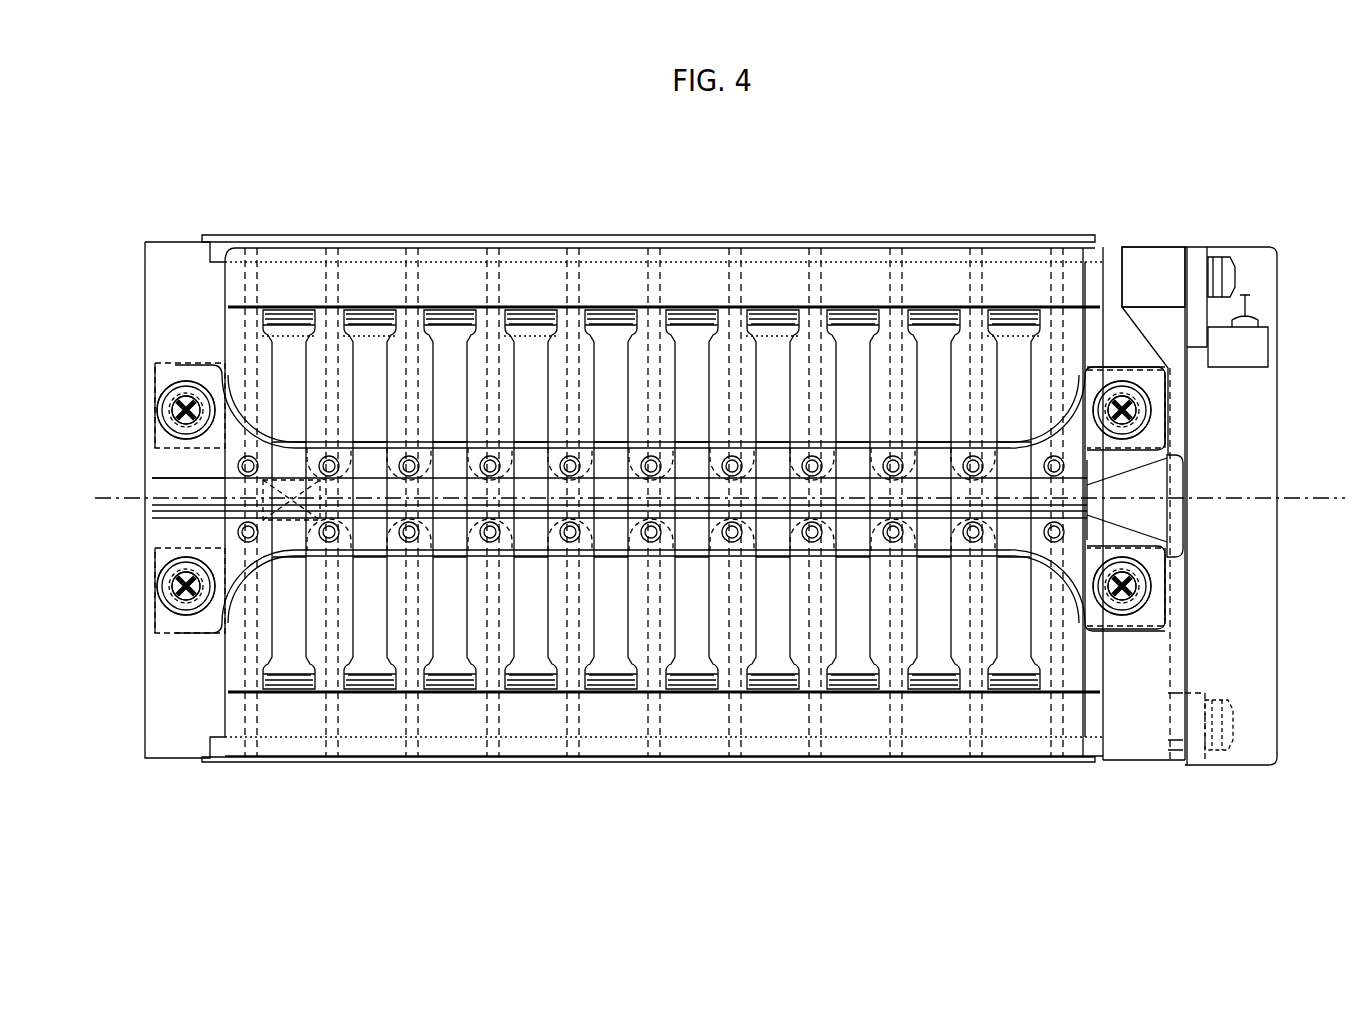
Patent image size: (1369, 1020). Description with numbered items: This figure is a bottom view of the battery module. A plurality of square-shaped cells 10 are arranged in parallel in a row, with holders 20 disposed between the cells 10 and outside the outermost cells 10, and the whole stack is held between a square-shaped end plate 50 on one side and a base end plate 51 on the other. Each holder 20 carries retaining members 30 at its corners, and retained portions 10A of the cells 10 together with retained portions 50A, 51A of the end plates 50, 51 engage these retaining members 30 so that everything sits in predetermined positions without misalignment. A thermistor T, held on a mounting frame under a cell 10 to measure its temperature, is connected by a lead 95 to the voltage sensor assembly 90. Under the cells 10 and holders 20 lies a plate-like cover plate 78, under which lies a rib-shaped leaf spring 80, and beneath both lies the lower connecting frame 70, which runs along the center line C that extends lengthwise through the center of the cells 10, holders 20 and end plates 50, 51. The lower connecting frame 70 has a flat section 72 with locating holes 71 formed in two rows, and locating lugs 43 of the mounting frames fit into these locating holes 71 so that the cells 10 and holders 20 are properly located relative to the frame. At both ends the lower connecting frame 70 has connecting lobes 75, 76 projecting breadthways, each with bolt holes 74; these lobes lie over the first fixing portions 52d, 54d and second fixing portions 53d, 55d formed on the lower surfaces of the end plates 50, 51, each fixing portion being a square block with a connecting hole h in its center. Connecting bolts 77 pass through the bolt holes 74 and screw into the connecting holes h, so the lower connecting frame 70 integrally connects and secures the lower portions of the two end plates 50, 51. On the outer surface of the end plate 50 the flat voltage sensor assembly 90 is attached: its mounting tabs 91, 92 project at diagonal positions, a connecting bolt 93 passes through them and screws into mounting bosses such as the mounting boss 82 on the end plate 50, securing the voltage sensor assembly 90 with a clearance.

The cell 10 is at (274, 285).
The retained portion 10A is at (312, 237).
The holder 20 is at (305, 372).
The retaining member 30 is at (252, 237).
The locating lug 43 is at (485, 462).
The end plate 50 is at (1152, 764).
The retained portion 50A is at (1085, 242).
The end plate 51 is at (148, 744).
The retained portion 51A is at (222, 240).
The first fixing portion 52d is at (1160, 393).
The second fixing portion 53d is at (1163, 630).
The first fixing portion 54d is at (175, 368).
The second fixing portion 55d is at (160, 622).
The lower connecting frame 70 is at (858, 558).
The locating hole 71 is at (420, 498).
The flat section 72 is at (382, 482).
The bolt hole 74 is at (186, 395).
The connecting lobe 75 is at (165, 458).
The connecting lobe 76 is at (165, 535).
The connecting bolt 77 is at (160, 408).
The cover plate 78 is at (222, 278).
The leaf spring 80 is at (268, 650).
The mounting boss 82 is at (1150, 262).
The voltage sensor assembly 90 is at (1262, 468).
The mounting tab 91 is at (1200, 765).
The mounting tab 92 is at (1197, 262).
The connecting bolt 93 is at (1228, 262).
The lead 95 is at (1250, 312).
The center line C is at (719, 497).
The thermistor T is at (300, 462).
The connecting hole h is at (196, 428).